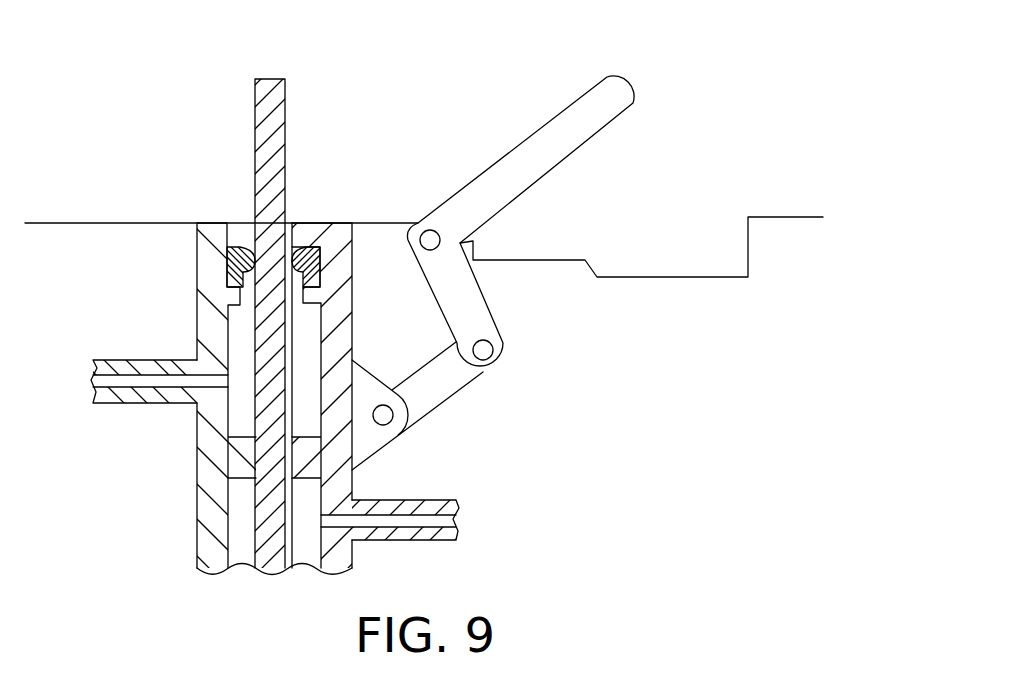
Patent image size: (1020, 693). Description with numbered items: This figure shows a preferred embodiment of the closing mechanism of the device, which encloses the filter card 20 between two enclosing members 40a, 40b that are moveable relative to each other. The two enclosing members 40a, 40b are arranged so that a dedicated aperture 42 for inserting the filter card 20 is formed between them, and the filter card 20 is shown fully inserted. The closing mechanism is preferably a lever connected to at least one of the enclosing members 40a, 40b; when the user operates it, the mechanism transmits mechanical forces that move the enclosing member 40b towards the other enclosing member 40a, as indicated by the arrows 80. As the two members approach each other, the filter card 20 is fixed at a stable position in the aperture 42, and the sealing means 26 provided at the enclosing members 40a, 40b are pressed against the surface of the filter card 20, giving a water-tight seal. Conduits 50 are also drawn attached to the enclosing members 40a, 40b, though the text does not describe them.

The filter card 20 is at (255, 98).
The sealing means 26 is at (226, 261).
The enclosing member 40a is at (212, 233).
The enclosing member 40b is at (337, 231).
The aperture 42 is at (288, 223).
The fluid conduit 50 is at (118, 398).
The arrows 80 is at (578, 78).